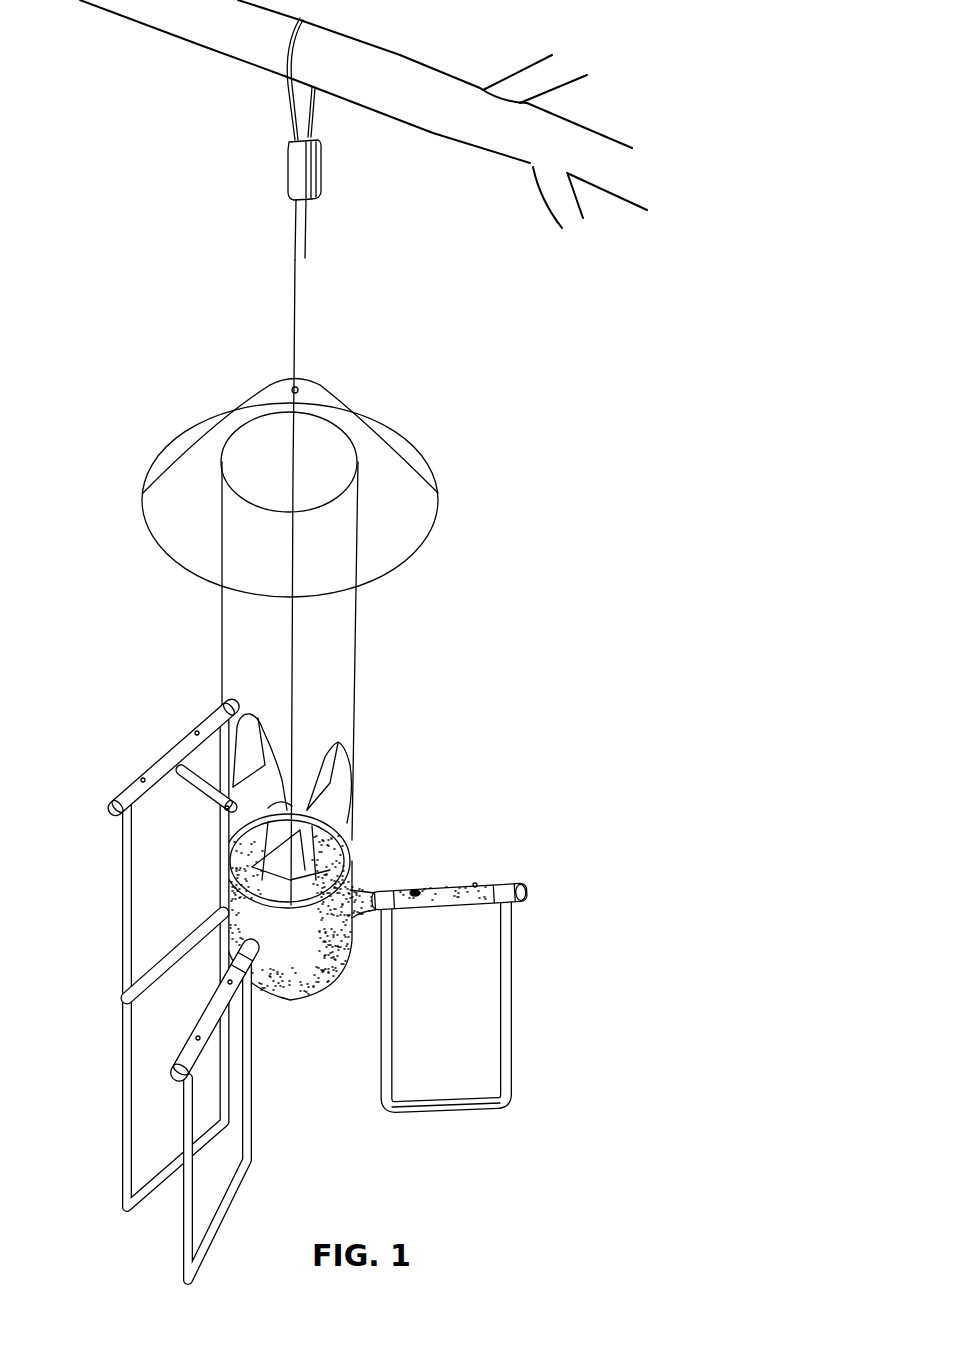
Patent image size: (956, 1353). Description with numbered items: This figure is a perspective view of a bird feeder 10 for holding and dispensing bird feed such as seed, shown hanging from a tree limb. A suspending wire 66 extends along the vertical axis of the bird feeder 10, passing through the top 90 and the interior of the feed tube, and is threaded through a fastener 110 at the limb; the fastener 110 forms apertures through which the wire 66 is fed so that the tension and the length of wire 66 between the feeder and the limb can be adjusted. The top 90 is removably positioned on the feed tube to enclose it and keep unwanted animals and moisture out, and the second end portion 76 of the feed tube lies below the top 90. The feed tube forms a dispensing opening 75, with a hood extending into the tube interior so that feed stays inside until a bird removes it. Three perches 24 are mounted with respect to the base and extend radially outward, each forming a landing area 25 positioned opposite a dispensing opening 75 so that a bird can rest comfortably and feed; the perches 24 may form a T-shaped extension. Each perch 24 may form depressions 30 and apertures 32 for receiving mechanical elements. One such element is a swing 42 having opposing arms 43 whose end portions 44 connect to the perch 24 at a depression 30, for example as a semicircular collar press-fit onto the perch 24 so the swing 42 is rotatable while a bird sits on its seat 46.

The bird feeder 10 is at (355, 690).
The perch 24 is at (340, 890).
The landing area 25 is at (306, 996).
The depression 30 is at (373, 920).
The aperture 32 is at (398, 874).
The swing 42 is at (447, 1019).
The opposing arms 43 is at (505, 935).
The end portion 44 is at (507, 880).
The seat 46 is at (440, 1107).
The suspending wire 66 is at (297, 293).
The dispensing opening 75 is at (345, 772).
The second end portion 76 is at (190, 593).
The top 90 is at (412, 537).
The fastener 110 is at (318, 150).